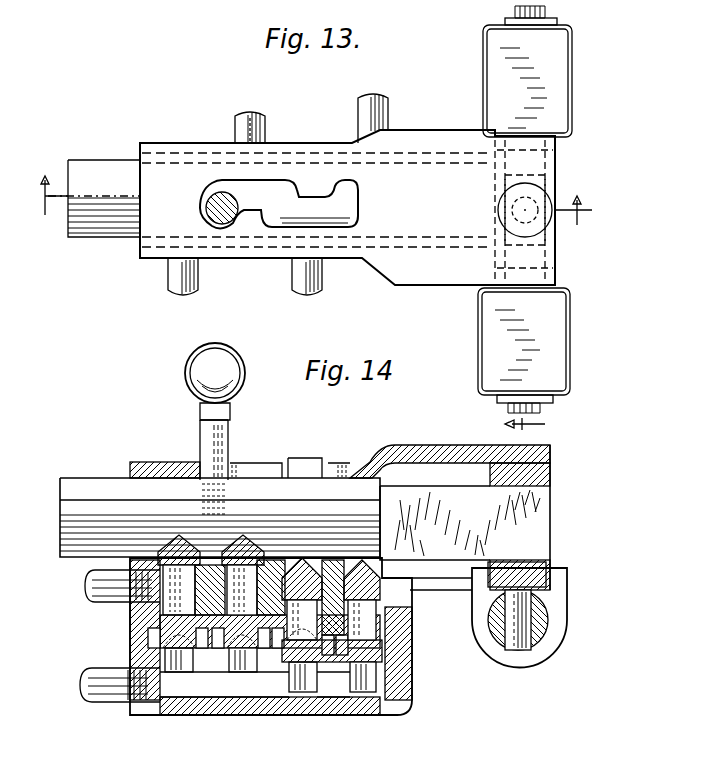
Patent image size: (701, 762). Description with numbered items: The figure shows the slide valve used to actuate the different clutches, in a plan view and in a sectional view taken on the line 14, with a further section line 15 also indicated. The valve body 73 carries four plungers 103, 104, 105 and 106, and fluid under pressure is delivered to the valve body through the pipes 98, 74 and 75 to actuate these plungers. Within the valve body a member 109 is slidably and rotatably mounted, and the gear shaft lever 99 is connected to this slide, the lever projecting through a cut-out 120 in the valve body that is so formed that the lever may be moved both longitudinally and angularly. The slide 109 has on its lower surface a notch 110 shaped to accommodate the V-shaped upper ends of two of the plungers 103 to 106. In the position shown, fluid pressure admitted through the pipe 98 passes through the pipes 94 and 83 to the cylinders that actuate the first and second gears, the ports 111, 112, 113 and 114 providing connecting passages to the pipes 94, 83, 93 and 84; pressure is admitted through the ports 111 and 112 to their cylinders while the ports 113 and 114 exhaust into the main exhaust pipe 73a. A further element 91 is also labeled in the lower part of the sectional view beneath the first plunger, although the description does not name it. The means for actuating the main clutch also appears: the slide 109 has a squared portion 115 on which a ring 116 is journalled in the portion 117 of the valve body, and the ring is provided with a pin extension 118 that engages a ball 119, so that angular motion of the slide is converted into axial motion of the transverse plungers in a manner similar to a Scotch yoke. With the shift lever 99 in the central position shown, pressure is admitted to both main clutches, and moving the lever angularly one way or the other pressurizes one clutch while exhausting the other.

In FIG. 13, the valve body 73 is at (168, 148).
In FIG. 14, the main exhaust pipe 73a is at (88, 585).
In FIG. 13, the pipe 74 is at (515, 11).
In FIG. 13, the pipe 75 is at (540, 405).
In FIG. 13, the pipe 83 is at (240, 126).
In FIG. 14, the pipe 83 is at (262, 700).
In FIG. 13, the pipe 84 is at (385, 114).
In FIG. 14, the pipe 84 is at (412, 620).
In FIG. 14, the screw 91 is at (175, 690).
In FIG. 13, the pipe 93 is at (322, 290).
In FIG. 14, the pipe 93 is at (302, 625).
In FIG. 13, the pipe 94 is at (172, 280).
In FIG. 14, the pipe 98 is at (105, 704).
In FIG. 13, the gear shaft lever 99 is at (207, 205).
In FIG. 14, the gear shaft lever 99 is at (207, 428).
In FIG. 14, the plunger 103 is at (162, 620).
In FIG. 14, the plunger 104 is at (243, 690).
In FIG. 14, the plunger 105 is at (298, 694).
In FIG. 14, the plunger 106 is at (405, 668).
In FIG. 13, the slide member 109 is at (73, 238).
In FIG. 14, the slide member 109 is at (82, 480).
In FIG. 14, the notch 110 is at (195, 535).
In FIG. 14, the port 111 is at (148, 636).
In FIG. 14, the port 112 is at (221, 684).
In FIG. 14, the port 113 is at (300, 685).
In FIG. 14, the port 114 is at (332, 700).
In FIG. 14, the squared portion 115 is at (450, 484).
In FIG. 14, the ring 116 is at (552, 476).
In FIG. 14, the portion of the valve body 117 is at (487, 450).
In FIG. 14, the pin extension 118 is at (528, 628).
In FIG. 14, the ball 119 is at (545, 608).
In FIG. 13, the cut-out 120 is at (292, 182).
In FIG. 13, the section line 14 is at (312, 200).
In FIG. 13, the section line 15 is at (563, 14).
In FIG. 14, the section line 15 is at (535, 425).